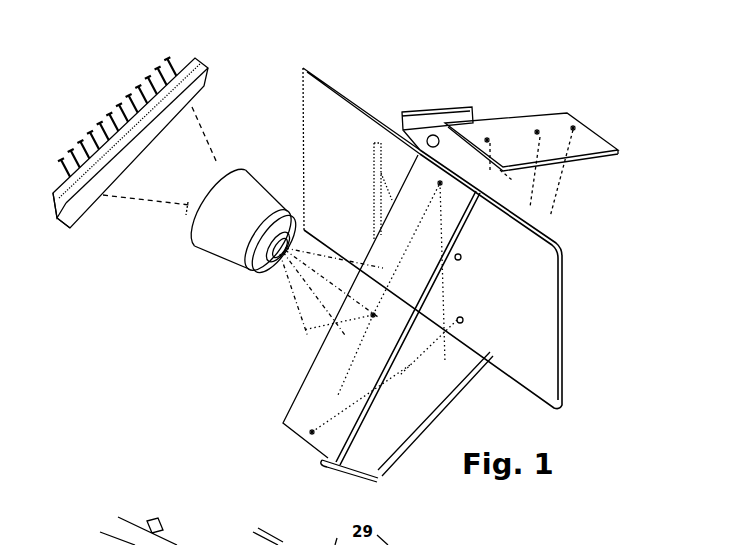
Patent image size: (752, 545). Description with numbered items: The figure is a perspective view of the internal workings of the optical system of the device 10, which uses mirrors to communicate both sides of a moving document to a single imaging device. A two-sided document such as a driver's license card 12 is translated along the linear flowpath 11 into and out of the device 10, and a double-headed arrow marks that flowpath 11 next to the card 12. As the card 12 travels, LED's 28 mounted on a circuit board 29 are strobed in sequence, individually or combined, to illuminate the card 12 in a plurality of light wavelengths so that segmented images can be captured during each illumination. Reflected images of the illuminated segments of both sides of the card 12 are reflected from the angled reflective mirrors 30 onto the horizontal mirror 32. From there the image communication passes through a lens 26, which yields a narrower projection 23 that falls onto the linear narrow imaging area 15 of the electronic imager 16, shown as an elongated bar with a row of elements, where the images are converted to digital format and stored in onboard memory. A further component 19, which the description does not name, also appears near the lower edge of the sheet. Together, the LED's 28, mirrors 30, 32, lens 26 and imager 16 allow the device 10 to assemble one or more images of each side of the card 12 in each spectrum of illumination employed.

The device 10 is at (170, 313).
The linear flowpath 11 is at (615, 455).
The driver's license card 12 is at (343, 143).
The linear narrow imaging area 15 is at (107, 190).
The electronic imager 16 is at (206, 82).
The component of second view 19 is at (240, 543).
The narrower projection 23 is at (145, 190).
The lens 26 is at (202, 222).
The LED's 28 is at (395, 183).
The circuit board 29 is at (415, 118).
The angled reflective mirrors 30 is at (512, 140).
The horizontal mirror 32 is at (368, 455).